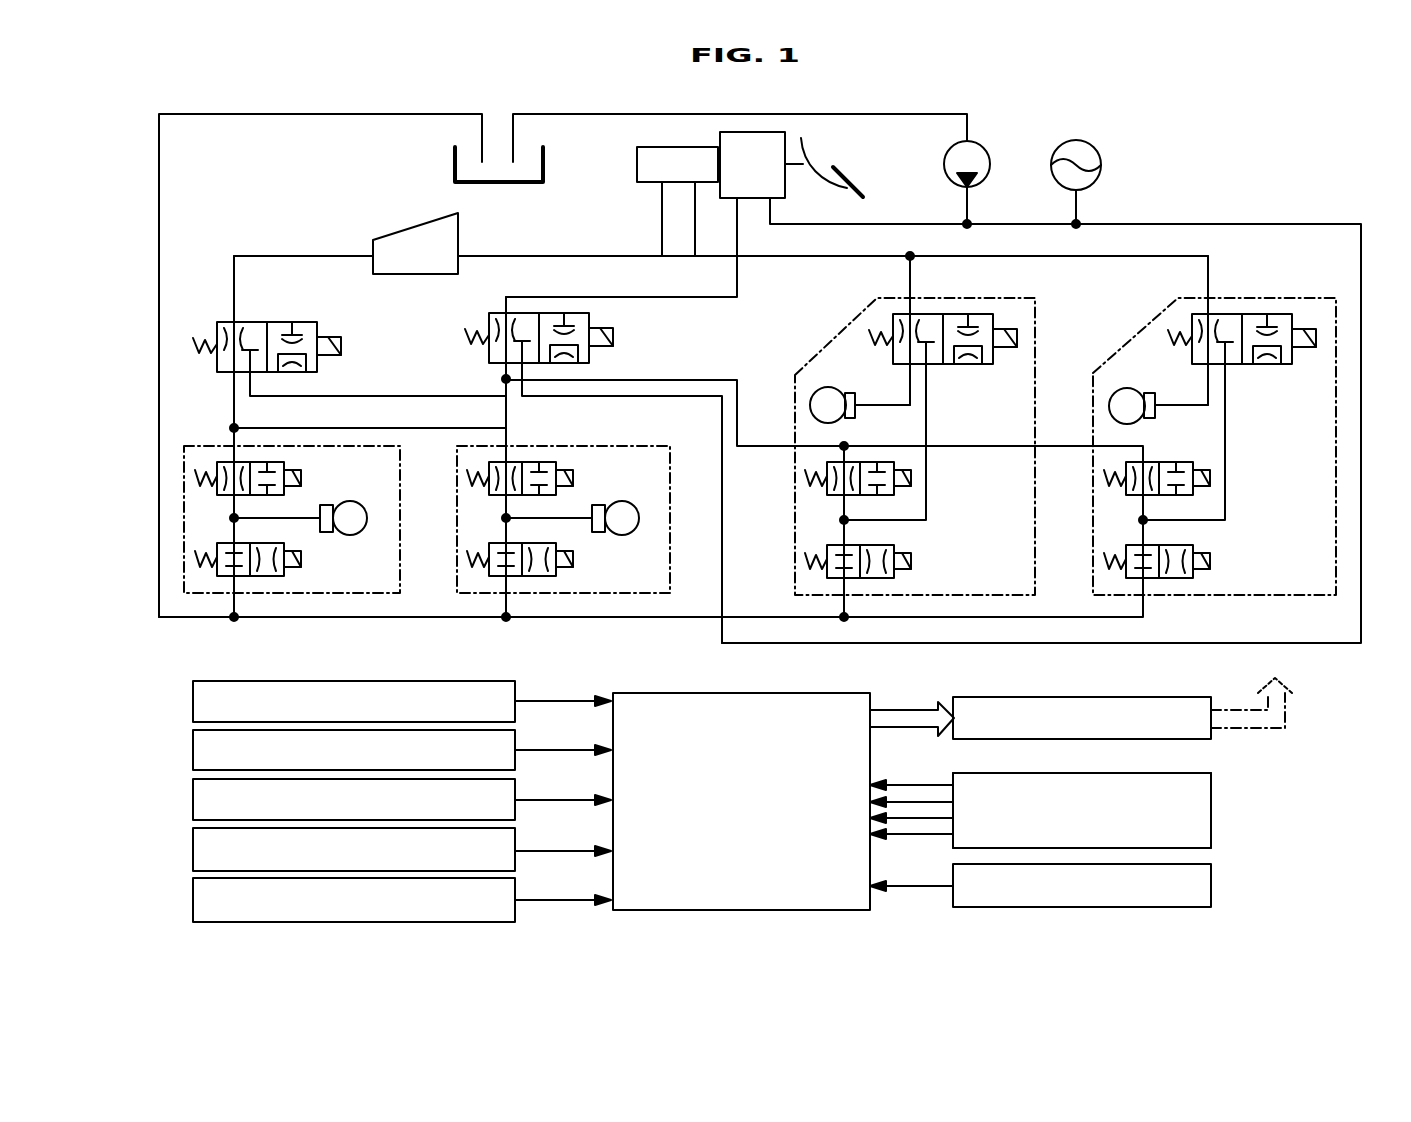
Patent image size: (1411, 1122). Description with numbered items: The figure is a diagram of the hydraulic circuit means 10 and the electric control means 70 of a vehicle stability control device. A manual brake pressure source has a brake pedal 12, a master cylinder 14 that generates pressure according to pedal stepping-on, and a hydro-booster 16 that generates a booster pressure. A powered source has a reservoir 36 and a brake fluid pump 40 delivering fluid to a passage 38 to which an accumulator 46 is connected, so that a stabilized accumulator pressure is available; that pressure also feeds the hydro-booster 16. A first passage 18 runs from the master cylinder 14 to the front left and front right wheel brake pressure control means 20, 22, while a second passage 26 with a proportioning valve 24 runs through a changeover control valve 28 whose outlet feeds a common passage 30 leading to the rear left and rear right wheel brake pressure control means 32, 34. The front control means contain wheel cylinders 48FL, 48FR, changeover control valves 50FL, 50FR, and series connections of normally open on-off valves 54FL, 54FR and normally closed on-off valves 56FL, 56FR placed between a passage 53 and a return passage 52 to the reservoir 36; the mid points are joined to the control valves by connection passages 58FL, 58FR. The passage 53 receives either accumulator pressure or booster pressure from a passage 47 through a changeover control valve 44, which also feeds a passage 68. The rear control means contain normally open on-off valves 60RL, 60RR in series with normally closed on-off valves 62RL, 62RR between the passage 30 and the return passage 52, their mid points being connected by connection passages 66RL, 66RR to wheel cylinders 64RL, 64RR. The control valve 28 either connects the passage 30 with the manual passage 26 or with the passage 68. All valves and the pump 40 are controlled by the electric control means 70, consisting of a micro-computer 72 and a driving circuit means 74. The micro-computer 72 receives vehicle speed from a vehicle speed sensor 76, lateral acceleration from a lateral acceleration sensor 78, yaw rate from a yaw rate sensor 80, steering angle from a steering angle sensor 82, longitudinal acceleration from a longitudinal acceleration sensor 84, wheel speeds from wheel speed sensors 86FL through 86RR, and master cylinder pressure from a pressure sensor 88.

The hydraulic circuit means 10 is at (147, 178).
The brake pedal 12 is at (846, 175).
The master cylinder 14 is at (648, 147).
The hydro-booster 16 is at (740, 177).
The first passage 18 is at (765, 256).
The front left wheel brake pressure control means 20 is at (844, 327).
The front right wheel brake pressure control means 22 is at (1125, 335).
The proportioning valve 24 is at (395, 235).
The second passage 26 is at (258, 256).
The changeover type electromagnetic control valve 28 is at (255, 322).
The common passage 30 is at (240, 415).
The rear left wheel brake pressure control means 32 is at (202, 440).
The rear right wheel brake pressure control means 34 is at (536, 598).
The reservoir 36 is at (455, 162).
The passage 38 is at (1240, 224).
The brake fluid pump 40 is at (993, 168).
The changeover type electronic control valve 44 is at (547, 313).
The accumulator 46 is at (1103, 165).
The passage 47 is at (652, 297).
The front left wheel cylinder 48FL is at (837, 423).
The front right wheel cylinder 48FR is at (1135, 423).
The front left changeover type electromagnetic control valve 50FL is at (953, 314).
The front right changeover type electromagnetic control valve 50FR is at (1228, 314).
The return passage 52 is at (765, 617).
The passage 53 is at (713, 380).
The front left normally open type electromagnetic on-off valve 54FL is at (890, 496).
The front right normally open type electromagnetic on-off valve 54FR is at (1188, 496).
The front left normally closed type electromagnetic on-off valve 56FL is at (880, 545).
The front right normally closed type electromagnetic on-off valve 56FR is at (1181, 545).
The front left connection passage 58FL is at (928, 394).
The front right connection passage 58FR is at (1225, 394).
The rear left normally open type electromagnetic on-off valve 60RL is at (225, 494).
The rear right normally open type electromagnetic on-off valve 60RR is at (527, 462).
The rear left normally closed type electromagnetic on-off valve 62RL is at (225, 577).
The rear right normally closed type electromagnetic on-off valve 62RR is at (495, 577).
The rear left wheel cylinder 64RL is at (350, 535).
The rear right wheel cylinder 64RR is at (622, 535).
The rear left connection passage 66RL is at (303, 518).
The rear right connection passage 66RR is at (577, 518).
The passage 68 is at (385, 396).
The electric control means 70 is at (1334, 733).
The micro-computer 72 is at (726, 845).
The driving circuit means 74 is at (1150, 739).
The vehicle speed sensor 76 is at (193, 701).
The lateral acceleration sensor 78 is at (193, 750).
The yaw rate sensor 80 is at (193, 800).
The steering angle sensor 82 is at (193, 851).
The longitudinal acceleration sensor 84 is at (193, 900).
The front left wheel speed sensor 86FL is at (1211, 808).
The rear right wheel speed sensor 86RR is at (1175, 810).
The pressure sensor 88 is at (1211, 888).